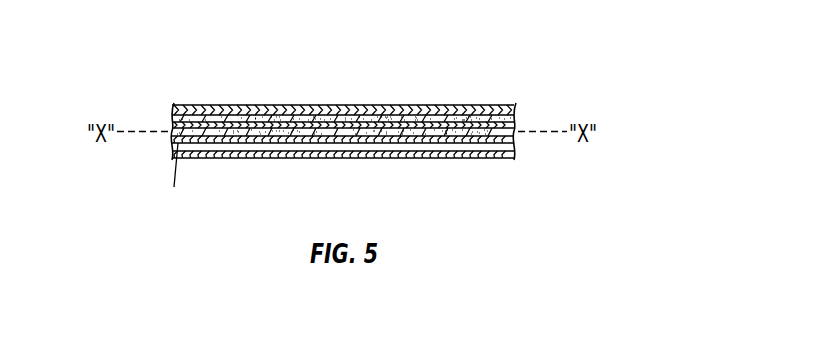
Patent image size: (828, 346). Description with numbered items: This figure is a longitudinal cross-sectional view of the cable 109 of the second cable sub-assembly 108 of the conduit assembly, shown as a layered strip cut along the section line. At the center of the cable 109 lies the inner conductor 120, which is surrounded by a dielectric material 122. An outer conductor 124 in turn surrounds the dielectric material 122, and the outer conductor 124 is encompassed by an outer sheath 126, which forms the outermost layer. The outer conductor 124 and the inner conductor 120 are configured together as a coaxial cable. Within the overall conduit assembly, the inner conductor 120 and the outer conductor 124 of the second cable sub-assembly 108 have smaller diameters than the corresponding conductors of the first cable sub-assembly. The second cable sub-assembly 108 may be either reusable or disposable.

The second cable sub-assembly 108 is at (451, 75).
The cable 109 is at (248, 105).
The inner conductor 120 is at (367, 127).
The dielectric material 122 is at (415, 140).
The outer conductor 124 is at (305, 140).
The outer sheath 126 is at (262, 150).